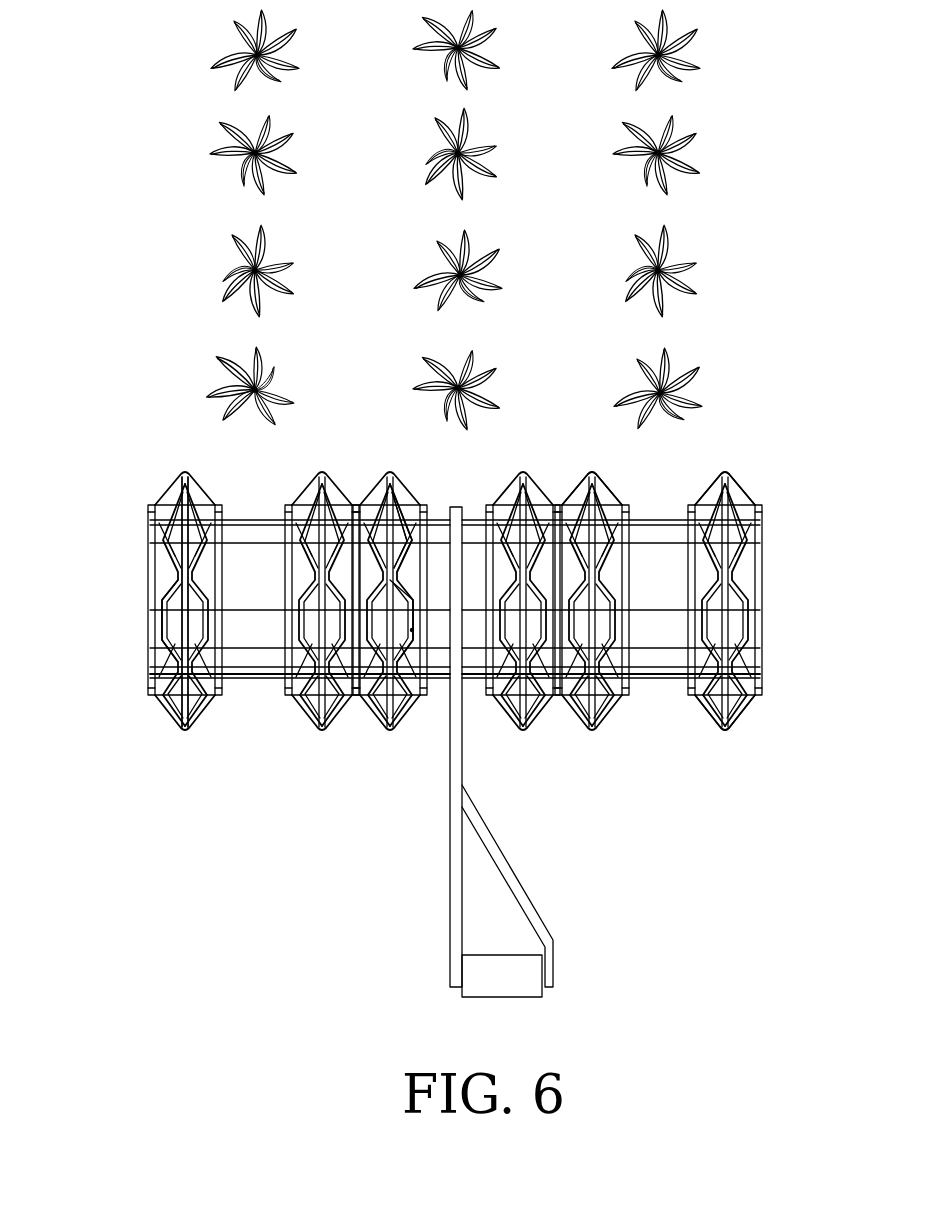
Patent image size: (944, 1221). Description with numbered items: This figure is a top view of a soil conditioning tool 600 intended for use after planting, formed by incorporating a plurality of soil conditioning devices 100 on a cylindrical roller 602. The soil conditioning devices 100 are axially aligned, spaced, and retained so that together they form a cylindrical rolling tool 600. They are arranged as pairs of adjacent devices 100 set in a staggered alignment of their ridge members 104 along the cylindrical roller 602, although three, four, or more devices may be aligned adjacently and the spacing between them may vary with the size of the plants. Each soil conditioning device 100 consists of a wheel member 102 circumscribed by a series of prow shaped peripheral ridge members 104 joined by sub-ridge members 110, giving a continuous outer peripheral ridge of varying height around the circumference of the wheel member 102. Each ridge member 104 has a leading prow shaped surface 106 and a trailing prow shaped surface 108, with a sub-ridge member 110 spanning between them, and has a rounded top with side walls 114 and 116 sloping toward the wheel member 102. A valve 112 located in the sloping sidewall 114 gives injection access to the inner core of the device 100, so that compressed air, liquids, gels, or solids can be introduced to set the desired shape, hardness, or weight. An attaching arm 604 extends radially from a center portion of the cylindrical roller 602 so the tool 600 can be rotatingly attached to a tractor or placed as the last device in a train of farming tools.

The soil conditioning device 100 is at (455, 624).
The wheel member 102 is at (363, 513).
The peripheral ridge member 104 is at (725, 470).
The leading prow shaped surface 106 is at (610, 502).
The trailing prow shaped surface 108 is at (402, 532).
The sub-ridge member 110 is at (190, 565).
The valve 112 is at (412, 630).
The side wall 114 is at (168, 647).
The side wall 116 is at (738, 697).
The soil conditioning tool 600 is at (765, 893).
The cylindrical roller 602 is at (247, 643).
The attaching arm 604 is at (567, 973).